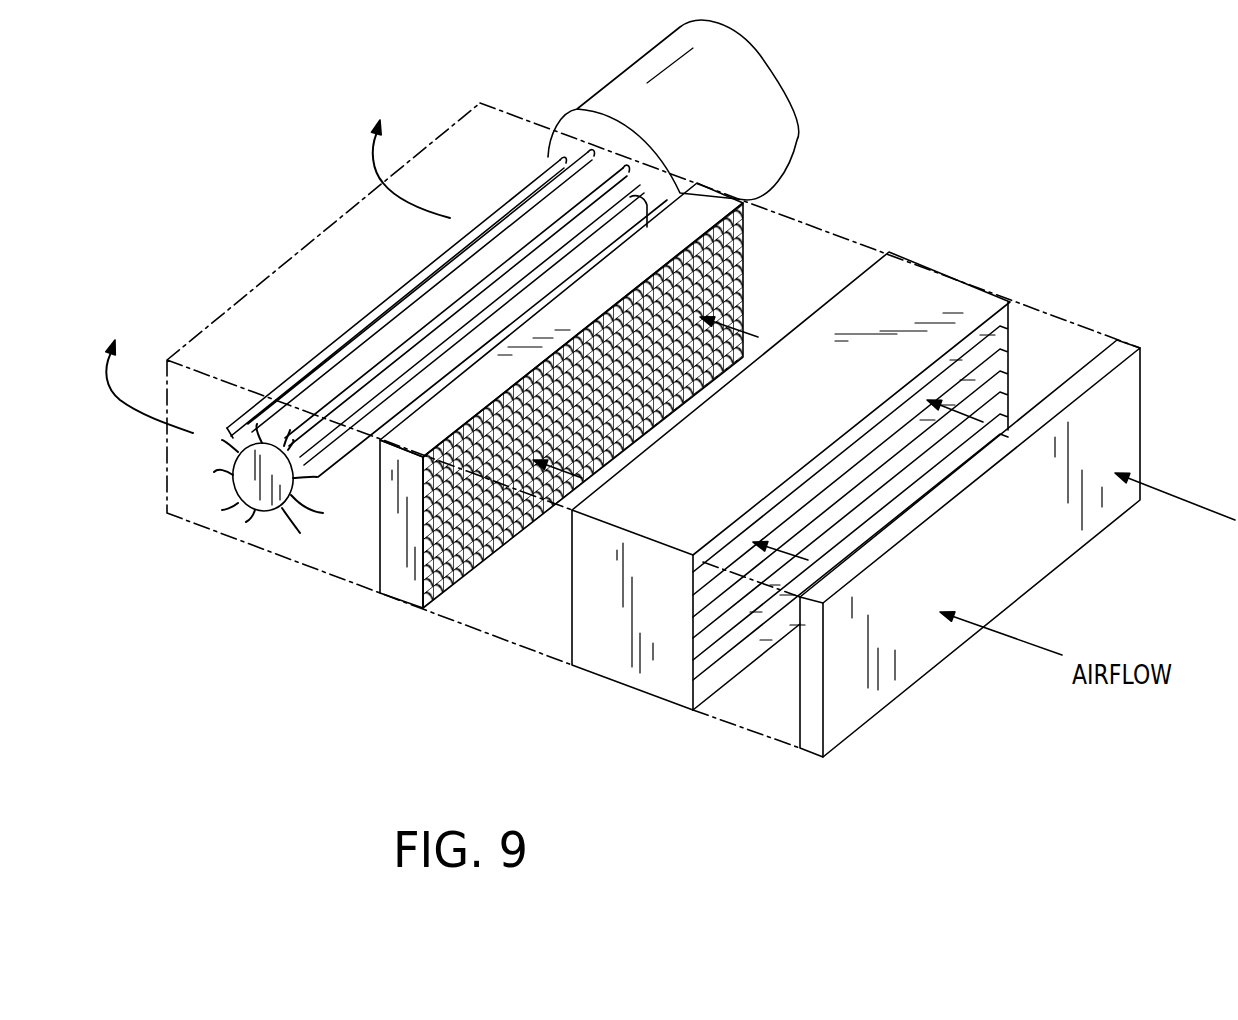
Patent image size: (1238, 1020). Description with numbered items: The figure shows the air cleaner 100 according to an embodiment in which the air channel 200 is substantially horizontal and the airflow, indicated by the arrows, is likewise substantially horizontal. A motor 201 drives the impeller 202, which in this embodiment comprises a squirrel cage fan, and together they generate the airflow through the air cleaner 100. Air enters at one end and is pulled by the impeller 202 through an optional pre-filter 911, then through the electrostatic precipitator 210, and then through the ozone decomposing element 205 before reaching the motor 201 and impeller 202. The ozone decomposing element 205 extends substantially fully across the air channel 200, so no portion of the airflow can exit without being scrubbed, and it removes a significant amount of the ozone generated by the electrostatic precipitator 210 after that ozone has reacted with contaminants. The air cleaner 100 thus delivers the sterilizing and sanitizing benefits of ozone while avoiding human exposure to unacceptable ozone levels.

The air cleaner 100 is at (338, 724).
The air channel 200 is at (815, 228).
The motor 201 is at (597, 90).
The impeller 202 is at (250, 515).
The ozone decomposing element 205 is at (398, 597).
The electrostatic precipitator 210 is at (590, 673).
The pre-filter 911 is at (813, 752).